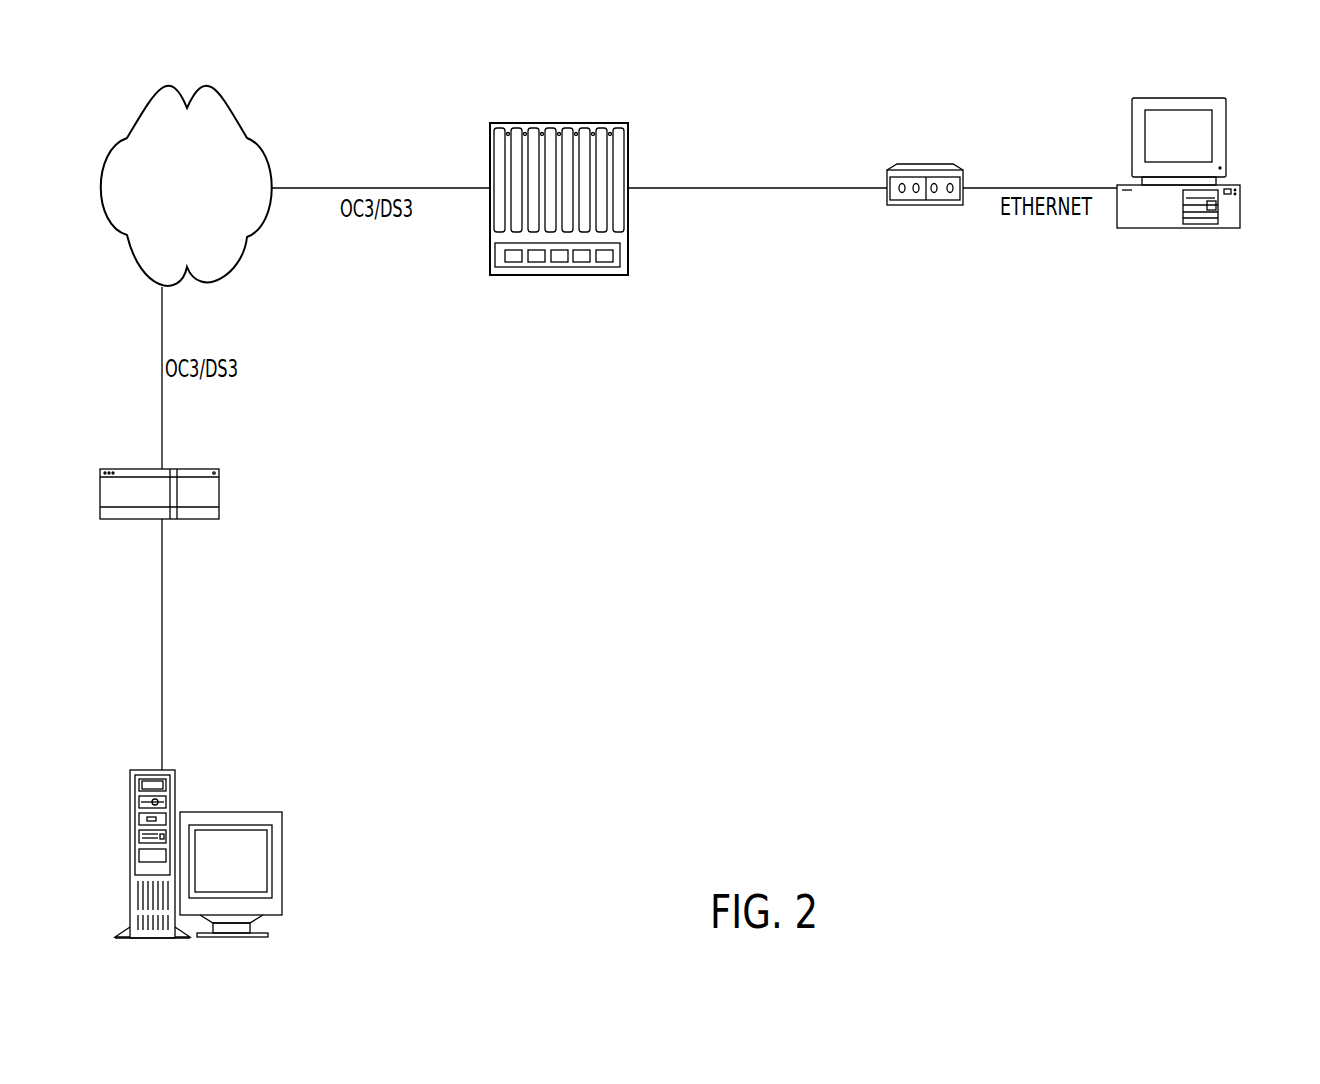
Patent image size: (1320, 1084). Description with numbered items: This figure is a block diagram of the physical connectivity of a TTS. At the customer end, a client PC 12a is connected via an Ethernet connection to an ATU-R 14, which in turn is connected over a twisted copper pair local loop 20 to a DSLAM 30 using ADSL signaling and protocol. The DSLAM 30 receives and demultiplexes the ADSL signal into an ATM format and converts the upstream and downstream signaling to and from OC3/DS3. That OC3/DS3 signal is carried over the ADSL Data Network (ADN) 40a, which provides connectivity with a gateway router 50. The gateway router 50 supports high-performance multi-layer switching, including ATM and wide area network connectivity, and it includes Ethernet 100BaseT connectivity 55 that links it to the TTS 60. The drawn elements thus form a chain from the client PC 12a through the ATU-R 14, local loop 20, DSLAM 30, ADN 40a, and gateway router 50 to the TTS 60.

The ADSL Data Network (ADN) 40a is at (236, 272).
The DSLAM 30 is at (628, 272).
The twisted copper pair local loop 20 is at (765, 188).
The ATU-R 14 is at (963, 203).
The client PC 12a is at (1240, 205).
The gateway router 50 is at (219, 492).
The Ethernet 100BaseT connectivity 55 is at (163, 624).
The TTS 60 is at (282, 858).